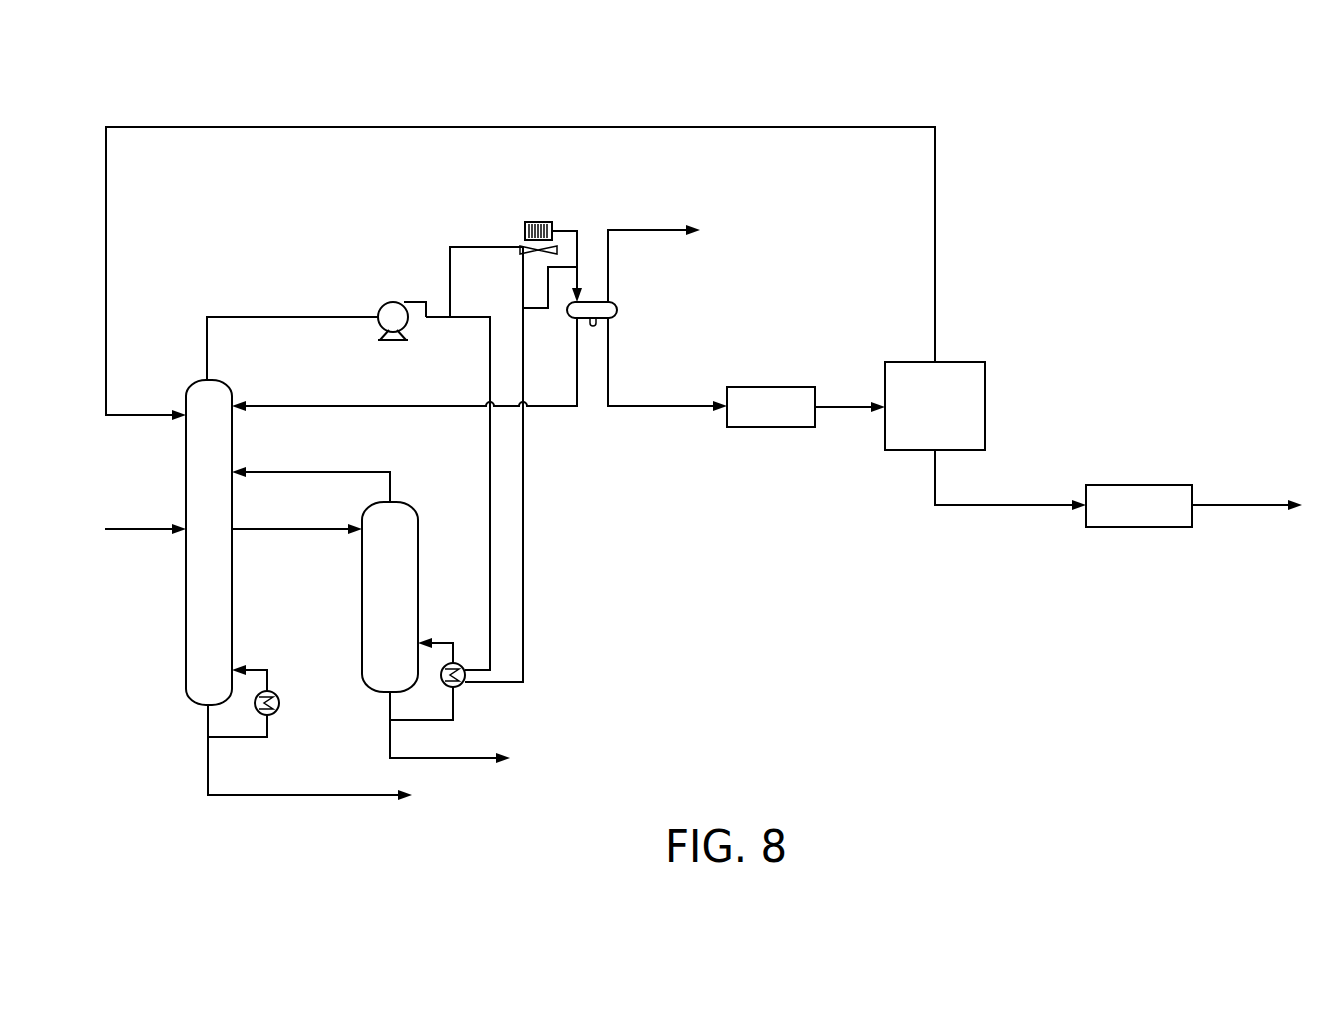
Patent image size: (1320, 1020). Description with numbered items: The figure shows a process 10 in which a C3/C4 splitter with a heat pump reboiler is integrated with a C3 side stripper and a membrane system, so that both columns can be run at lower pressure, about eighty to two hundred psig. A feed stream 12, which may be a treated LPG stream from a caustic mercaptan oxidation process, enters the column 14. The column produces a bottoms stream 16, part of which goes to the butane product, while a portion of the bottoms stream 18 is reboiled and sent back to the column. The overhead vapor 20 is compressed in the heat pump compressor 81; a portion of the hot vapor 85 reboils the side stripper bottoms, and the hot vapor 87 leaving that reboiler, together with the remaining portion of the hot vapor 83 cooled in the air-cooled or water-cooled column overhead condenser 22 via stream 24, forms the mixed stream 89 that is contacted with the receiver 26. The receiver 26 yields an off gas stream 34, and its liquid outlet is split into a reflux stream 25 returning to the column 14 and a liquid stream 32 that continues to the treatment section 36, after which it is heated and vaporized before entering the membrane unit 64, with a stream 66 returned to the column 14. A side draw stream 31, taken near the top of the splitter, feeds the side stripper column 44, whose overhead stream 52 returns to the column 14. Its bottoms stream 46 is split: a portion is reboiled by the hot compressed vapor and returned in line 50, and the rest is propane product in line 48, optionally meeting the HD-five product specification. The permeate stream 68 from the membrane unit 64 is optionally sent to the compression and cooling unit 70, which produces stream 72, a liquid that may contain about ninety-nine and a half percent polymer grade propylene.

The process 10 is at (1255, 132).
The stream 12 is at (118, 527).
The column 14 is at (232, 626).
The bottoms stream 16 is at (285, 795).
The bottoms stream portion 18 is at (268, 734).
The overhead stream 20 is at (291, 317).
The column overhead condenser 22 is at (538, 222).
The stream 24 is at (548, 287).
The reflux stream 25 is at (552, 406).
The receiver 26 is at (617, 309).
The side draw stream 31 is at (293, 529).
The liquid stream 32 is at (684, 406).
The off gas stream 34 is at (650, 230).
The treatment section 36 is at (771, 387).
The column 44 is at (418, 584).
The bottoms stream 46 is at (390, 708).
The propane product line 48 is at (390, 741).
The line 50 is at (461, 686).
The overhead stream 52 is at (380, 472).
The membrane unit 64 is at (985, 408).
The stream 66 is at (742, 127).
The permeate stream 68 is at (1008, 505).
The compression and cooling unit 70 is at (1136, 485).
The stream 72 is at (1234, 505).
The heat pump compressor 81 is at (391, 302).
The hot vapor 83 is at (488, 247).
The hot vapor 85 is at (490, 363).
The hot vapor 87 is at (523, 542).
The mixed stream 89 is at (581, 283).